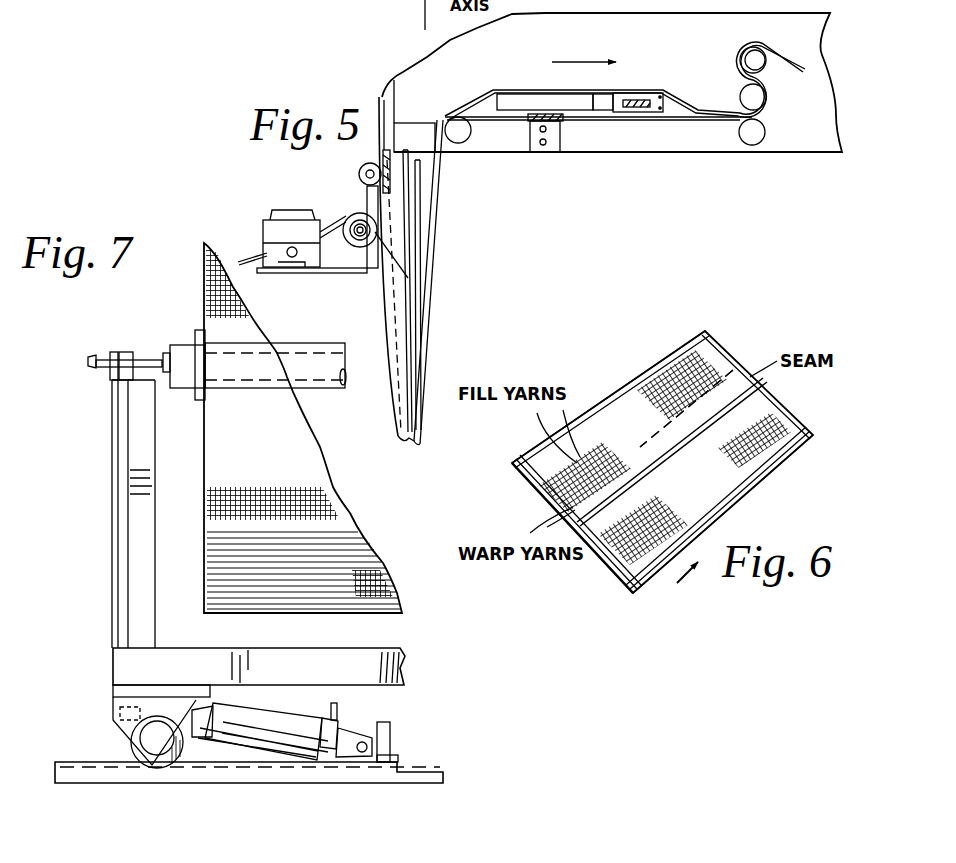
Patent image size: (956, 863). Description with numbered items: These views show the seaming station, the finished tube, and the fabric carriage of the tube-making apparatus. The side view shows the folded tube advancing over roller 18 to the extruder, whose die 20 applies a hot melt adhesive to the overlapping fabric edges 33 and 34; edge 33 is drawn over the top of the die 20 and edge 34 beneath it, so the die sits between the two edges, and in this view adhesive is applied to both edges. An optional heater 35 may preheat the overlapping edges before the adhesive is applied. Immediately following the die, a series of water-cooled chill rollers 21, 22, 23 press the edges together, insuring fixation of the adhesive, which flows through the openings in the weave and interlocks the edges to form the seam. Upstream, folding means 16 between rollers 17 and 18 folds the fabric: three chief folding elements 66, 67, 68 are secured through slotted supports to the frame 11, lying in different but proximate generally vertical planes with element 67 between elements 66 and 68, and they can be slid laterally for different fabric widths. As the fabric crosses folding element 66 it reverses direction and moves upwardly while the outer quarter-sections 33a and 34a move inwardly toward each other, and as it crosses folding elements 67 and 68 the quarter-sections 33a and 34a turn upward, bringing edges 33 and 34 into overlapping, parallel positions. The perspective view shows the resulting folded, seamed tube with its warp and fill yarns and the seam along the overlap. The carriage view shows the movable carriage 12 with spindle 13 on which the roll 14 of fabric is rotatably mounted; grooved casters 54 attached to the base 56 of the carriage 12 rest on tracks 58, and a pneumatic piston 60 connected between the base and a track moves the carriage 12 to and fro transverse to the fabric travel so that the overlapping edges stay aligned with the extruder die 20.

In FIG. 5, the frame 11 is at (405, 150).
In FIG. 7, the movable carriage 12 is at (417, 663).
In FIG. 7, the spindle 13 is at (180, 352).
In FIG. 7, the roll of fabric 14 is at (398, 590).
In FIG. 5, the folding means 16 is at (409, 453).
In FIG. 5, the roller 17 is at (356, 226).
In FIG. 5, the roller 18 is at (457, 134).
In FIG. 5, the extruder die 20 is at (637, 100).
In FIG. 5, the chill roller 21 is at (753, 135).
In FIG. 5, the chill roller 22 is at (759, 96).
In FIG. 5, the chill roller 23 is at (754, 63).
In FIG. 5, the fabric edge 33 is at (557, 90).
In FIG. 6, the fabric edge 33 is at (733, 372).
In FIG. 6, the outer quarter-section 33a is at (632, 417).
In FIG. 5, the fabric edge 34 is at (683, 113).
In FIG. 6, the fabric edge 34 is at (668, 462).
In FIG. 6, the outer quarter-section 34a is at (723, 480).
In FIG. 5, the heater 35 is at (522, 104).
In FIG. 7, the grooved caster 54 is at (155, 766).
In FIG. 7, the base 56 is at (370, 670).
In FIG. 7, the track 58 is at (77, 762).
In FIG. 7, the pneumatic piston 60 is at (270, 716).
In FIG. 5, the folding element 66 is at (396, 275).
In FIG. 5, the folding element 67 is at (411, 206).
In FIG. 5, the folding element 68 is at (423, 230).